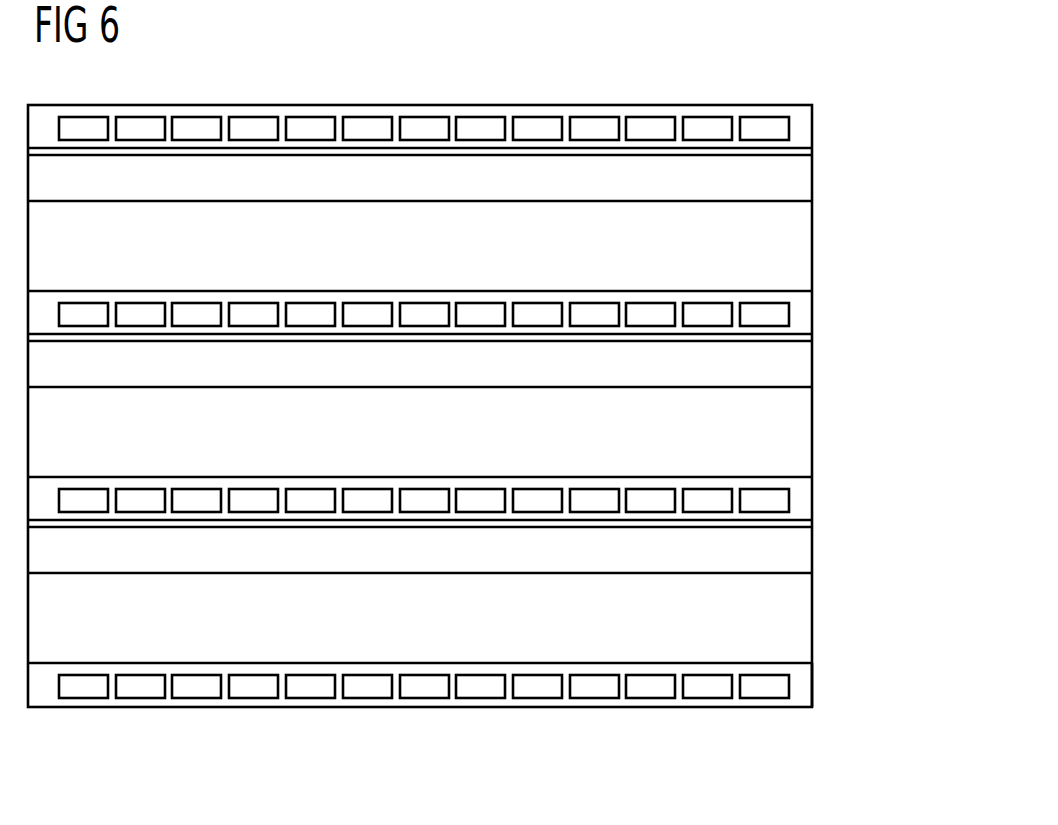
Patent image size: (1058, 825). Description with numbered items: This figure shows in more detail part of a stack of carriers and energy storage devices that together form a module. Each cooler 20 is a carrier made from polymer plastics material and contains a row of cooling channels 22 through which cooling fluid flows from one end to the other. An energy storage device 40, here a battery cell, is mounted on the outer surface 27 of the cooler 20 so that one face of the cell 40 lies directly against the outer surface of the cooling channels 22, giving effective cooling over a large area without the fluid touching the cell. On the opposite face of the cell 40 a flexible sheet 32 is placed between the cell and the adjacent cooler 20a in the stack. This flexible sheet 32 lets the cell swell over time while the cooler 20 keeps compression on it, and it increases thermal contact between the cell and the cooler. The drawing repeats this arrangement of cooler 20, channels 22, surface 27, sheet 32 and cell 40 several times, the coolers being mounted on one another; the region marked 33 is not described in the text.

The cooler 20 is at (405, 725).
The adjacent cooler 20a is at (836, 503).
The cooling channels 22 is at (595, 690).
The outer surface 27 is at (797, 476).
The flexible sheet 32 is at (802, 180).
The cell row housing 33 is at (798, 697).
The energy storage device 40 is at (833, 249).